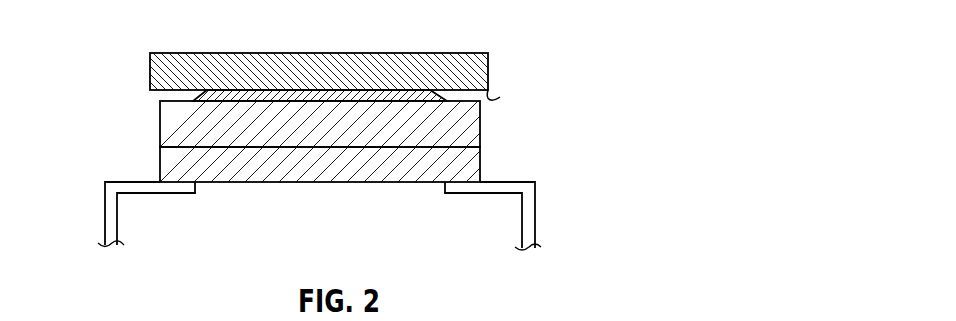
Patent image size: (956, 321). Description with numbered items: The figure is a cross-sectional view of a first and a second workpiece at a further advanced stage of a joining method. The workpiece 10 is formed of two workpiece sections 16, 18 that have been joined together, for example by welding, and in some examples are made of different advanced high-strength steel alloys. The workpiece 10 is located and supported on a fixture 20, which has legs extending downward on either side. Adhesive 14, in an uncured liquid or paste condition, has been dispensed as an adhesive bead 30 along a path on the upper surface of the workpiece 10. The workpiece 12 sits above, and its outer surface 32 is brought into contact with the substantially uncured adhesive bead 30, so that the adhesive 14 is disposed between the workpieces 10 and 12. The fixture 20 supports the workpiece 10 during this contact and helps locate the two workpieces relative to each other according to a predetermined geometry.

The workpiece 10 is at (334, 169).
The workpiece 12 is at (442, 72).
The adhesive 14 is at (325, 95).
The workpiece section 16 is at (473, 127).
The workpiece section 18 is at (473, 160).
The fixture 20 is at (105, 230).
The adhesive bead 30 is at (393, 97).
The outer surface 32 is at (500, 97).